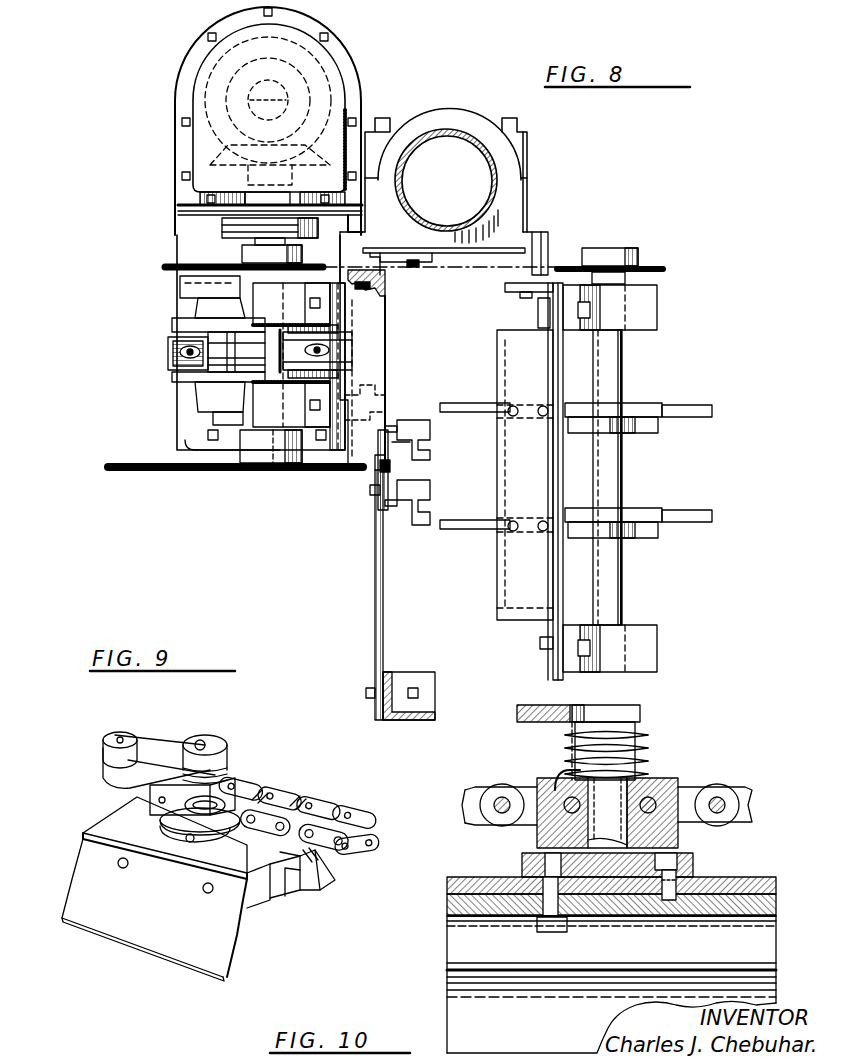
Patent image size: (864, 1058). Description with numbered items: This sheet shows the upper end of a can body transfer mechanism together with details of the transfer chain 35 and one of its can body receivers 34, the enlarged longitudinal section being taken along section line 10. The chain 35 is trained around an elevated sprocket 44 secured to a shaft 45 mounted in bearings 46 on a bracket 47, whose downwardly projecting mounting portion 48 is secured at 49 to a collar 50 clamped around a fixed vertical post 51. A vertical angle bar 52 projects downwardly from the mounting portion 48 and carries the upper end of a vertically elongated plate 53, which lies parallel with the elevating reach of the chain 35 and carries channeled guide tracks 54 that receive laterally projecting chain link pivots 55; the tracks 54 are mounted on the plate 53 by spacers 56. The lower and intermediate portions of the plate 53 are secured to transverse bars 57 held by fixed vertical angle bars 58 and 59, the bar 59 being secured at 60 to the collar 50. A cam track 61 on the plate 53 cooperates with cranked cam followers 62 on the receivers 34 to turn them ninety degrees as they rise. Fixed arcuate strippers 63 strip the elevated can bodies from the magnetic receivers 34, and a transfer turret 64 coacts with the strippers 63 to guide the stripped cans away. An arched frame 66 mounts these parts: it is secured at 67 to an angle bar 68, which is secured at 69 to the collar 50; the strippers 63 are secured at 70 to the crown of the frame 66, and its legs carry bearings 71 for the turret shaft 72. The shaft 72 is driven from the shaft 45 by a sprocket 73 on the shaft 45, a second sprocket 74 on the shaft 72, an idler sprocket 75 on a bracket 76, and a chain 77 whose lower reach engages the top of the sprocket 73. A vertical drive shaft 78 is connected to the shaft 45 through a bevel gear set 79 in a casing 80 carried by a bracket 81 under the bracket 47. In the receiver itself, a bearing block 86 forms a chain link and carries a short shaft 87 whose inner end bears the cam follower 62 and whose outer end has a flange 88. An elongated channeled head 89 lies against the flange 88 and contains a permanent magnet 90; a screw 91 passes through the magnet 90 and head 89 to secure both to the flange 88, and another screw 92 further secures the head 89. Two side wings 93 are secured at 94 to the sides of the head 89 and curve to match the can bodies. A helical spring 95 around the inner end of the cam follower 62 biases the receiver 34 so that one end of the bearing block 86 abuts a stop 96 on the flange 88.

In FIG. 9, the section line 10 is at (240, 830).
In FIG. 9, the can body receiver 34 is at (155, 955).
In FIG. 10, the can body receiver 34 is at (455, 975).
In FIG. 9, the transfer chain 35 is at (345, 825).
In FIG. 10, the transfer chain 35 is at (764, 787).
In FIG. 8, the elevated sprocket 44 is at (228, 472).
In FIG. 8, the shaft 45 is at (262, 350).
In FIG. 8, the bearings 46 is at (259, 363).
In FIG. 8, the bracket 47 is at (190, 435).
In FIG. 8, the mounting portion 48 is at (380, 345).
In FIG. 8, the securing point 49 is at (385, 292).
In FIG. 8, the collar 50 is at (505, 210).
In FIG. 8, the fixed vertical post 51 is at (475, 96).
In FIG. 8, the vertical angle bar 52 is at (388, 400).
In FIG. 8, the vertically elongated plate 53 is at (376, 482).
In FIG. 8, the channeled guide tracks 54 is at (428, 434).
In FIG. 9, the chain link pivots 55 is at (255, 800).
In FIG. 10, the chain link pivots 55 is at (520, 770).
In FIG. 8, the spacers 56 is at (395, 430).
In FIG. 8, the transverse bars 57 is at (377, 586).
In FIG. 8, the fixed vertical angle bar 58 is at (394, 672).
In FIG. 8, the fixed vertical angle bar 59 is at (420, 260).
In FIG. 8, the securing point 60 is at (412, 262).
In FIG. 8, the cam track 61 is at (392, 478).
In FIG. 9, the cranked cam follower 62 is at (150, 740).
In FIG. 10, the cranked cam follower 62 is at (510, 708).
In FIG. 8, the arcuate strippers 63 is at (490, 403).
In FIG. 8, the transfer turret 64 is at (690, 425).
In FIG. 8, the arched frame 66 is at (515, 368).
In FIG. 8, the securing point 67 is at (538, 312).
In FIG. 8, the angle bar 68 is at (505, 288).
In FIG. 8, the securing point 69 is at (520, 296).
In FIG. 8, the securing point 70 is at (543, 418).
In FIG. 8, the bearings 71 is at (645, 310).
In FIG. 8, the turret shaft 72 is at (612, 370).
In FIG. 8, the sprocket 73 is at (265, 255).
In FIG. 8, the second sprocket 74 is at (660, 266).
In FIG. 8, the idler sprocket 75 is at (168, 266).
In FIG. 8, the bracket 76 is at (167, 357).
In FIG. 8, the chain 77 is at (495, 285).
In FIG. 8, the vertical drive shaft 78 is at (248, 98).
In FIG. 8, the bevel gear set 79 is at (210, 156).
In FIG. 8, the casing 80 is at (215, 62).
In FIG. 8, the bracket 81 is at (185, 222).
In FIG. 9, the bearing block 86 is at (215, 800).
In FIG. 10, the bearing block 86 is at (640, 785).
In FIG. 9, the short shaft 87 is at (205, 740).
In FIG. 10, the short shaft 87 is at (600, 825).
In FIG. 9, the flange 88 is at (175, 832).
In FIG. 10, the flange 88 is at (522, 862).
In FIG. 9, the channeled head 89 is at (110, 818).
In FIG. 10, the channeled head 89 is at (740, 872).
In FIG. 9, the permanent magnet 90 is at (265, 898).
In FIG. 10, the permanent magnet 90 is at (455, 935).
In FIG. 10, the screw 91 is at (556, 930).
In FIG. 10, the screw 92 is at (665, 900).
In FIG. 9, the side wings 93 is at (328, 895).
In FIG. 10, the side wings 93 is at (455, 1012).
In FIG. 9, the securing point 94 is at (120, 868).
In FIG. 9, the helical spring 95 is at (215, 775).
In FIG. 10, the helical spring 95 is at (645, 745).
In FIG. 9, the stop 96 is at (190, 842).